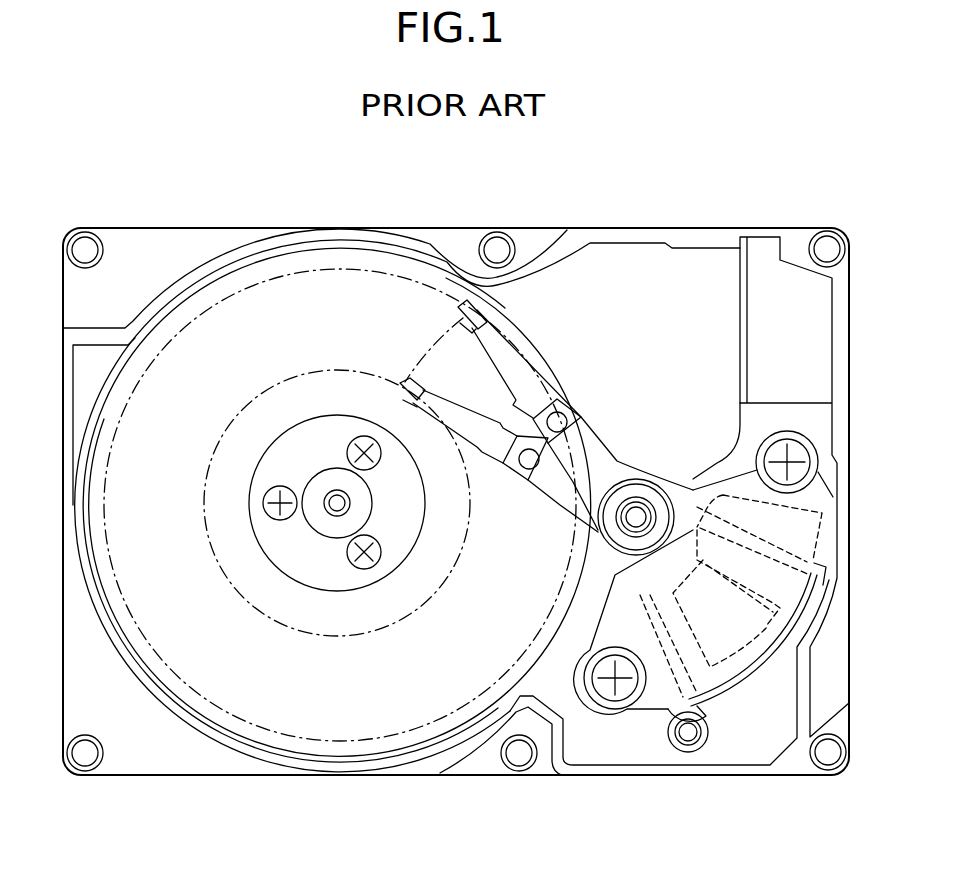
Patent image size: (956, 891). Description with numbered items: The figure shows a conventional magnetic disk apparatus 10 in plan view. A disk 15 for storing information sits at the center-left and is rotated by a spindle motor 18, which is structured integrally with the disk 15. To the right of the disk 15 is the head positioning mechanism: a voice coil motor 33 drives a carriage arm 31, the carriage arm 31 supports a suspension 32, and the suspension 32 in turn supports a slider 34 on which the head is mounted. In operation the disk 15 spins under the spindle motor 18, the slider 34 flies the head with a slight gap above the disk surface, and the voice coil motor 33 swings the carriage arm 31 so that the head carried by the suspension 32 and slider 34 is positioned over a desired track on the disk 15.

The base housing 10 is at (467, 745).
The disk 15 is at (293, 700).
The spindle motor 18 is at (317, 435).
The carriage arm 31 is at (628, 470).
The suspension 32 is at (525, 372).
The voice coil motor 33 is at (737, 680).
The slider 34 is at (478, 316).